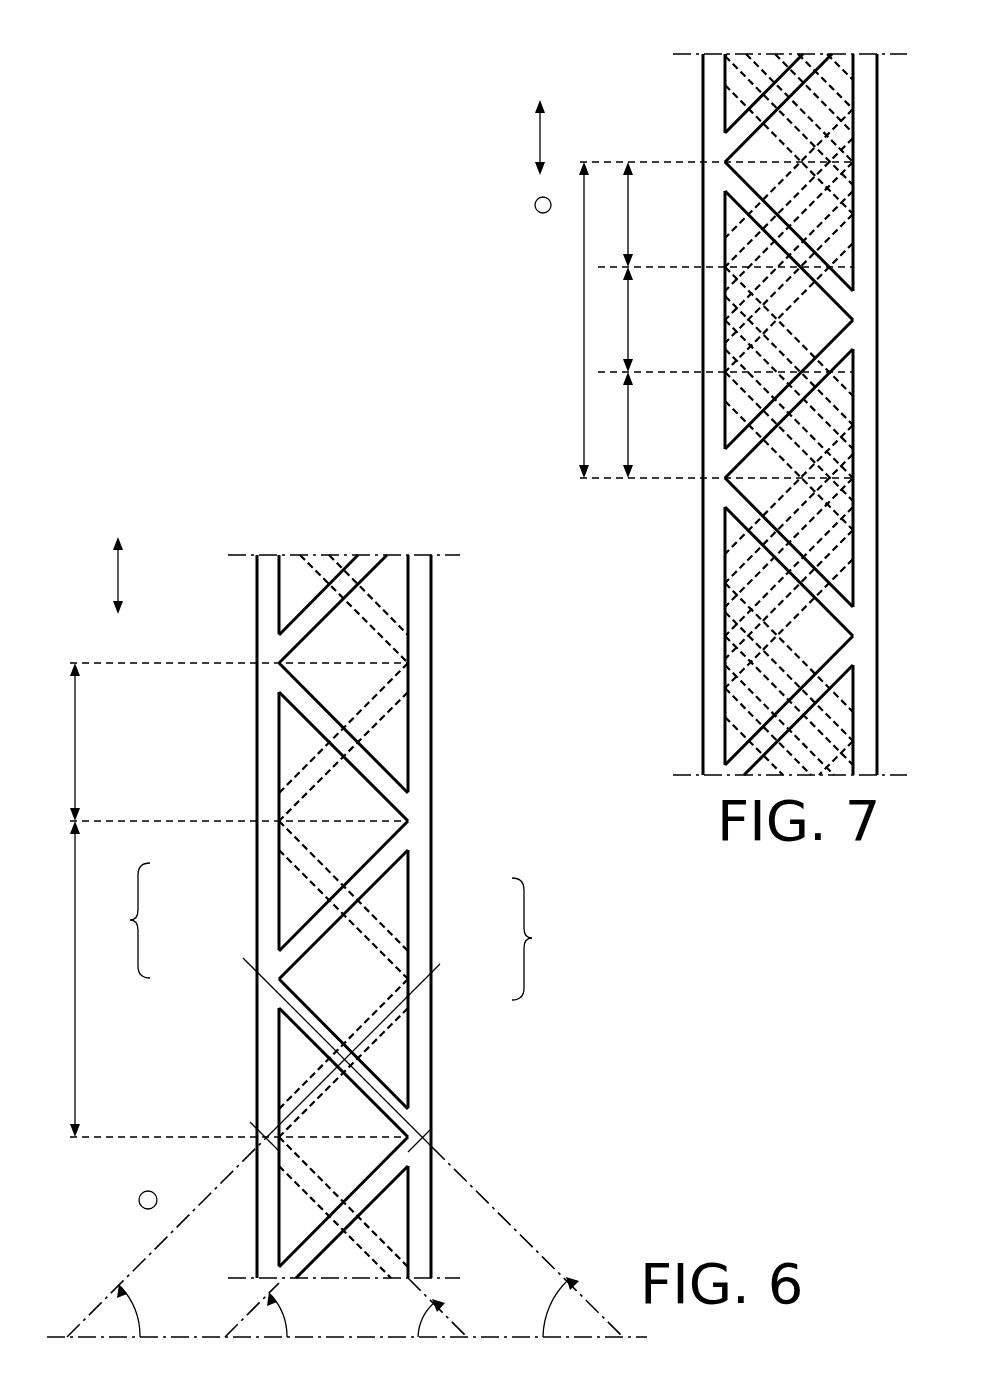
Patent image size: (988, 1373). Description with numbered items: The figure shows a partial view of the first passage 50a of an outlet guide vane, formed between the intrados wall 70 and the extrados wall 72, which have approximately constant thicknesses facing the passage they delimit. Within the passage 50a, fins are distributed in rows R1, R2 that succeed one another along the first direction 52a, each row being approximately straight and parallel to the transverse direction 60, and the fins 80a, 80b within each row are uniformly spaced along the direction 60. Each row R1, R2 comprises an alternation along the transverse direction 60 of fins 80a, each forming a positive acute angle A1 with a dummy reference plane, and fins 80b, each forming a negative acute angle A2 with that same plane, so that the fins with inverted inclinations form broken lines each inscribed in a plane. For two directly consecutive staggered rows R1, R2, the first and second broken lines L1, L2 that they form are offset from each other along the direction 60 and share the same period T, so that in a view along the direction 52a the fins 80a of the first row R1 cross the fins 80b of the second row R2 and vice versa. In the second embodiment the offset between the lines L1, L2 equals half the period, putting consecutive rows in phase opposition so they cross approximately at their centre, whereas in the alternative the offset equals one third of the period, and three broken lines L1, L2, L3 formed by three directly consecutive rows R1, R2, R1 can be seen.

In FIG. 6, the first passage 50a is at (332, 916).
In FIG. 7, the first passage 50a is at (827, 396).
In FIG. 6, the first direction 52a is at (139, 1205).
In FIG. 7, the first direction 52a is at (535, 208).
In FIG. 6, the transverse direction 60 is at (112, 578).
In FIG. 7, the transverse direction 60 is at (532, 148).
In FIG. 6, the intrados wall 70 is at (264, 735).
In FIG. 7, the intrados wall 70 is at (712, 142).
In FIG. 6, the extrados wall 72 is at (421, 652).
In FIG. 7, the extrados wall 72 is at (864, 117).
In FIG. 6, the fins 80a is at (317, 878).
In FIG. 6, the fins 80b is at (307, 777).
In FIG. 6, the first row R1 is at (535, 939).
In FIG. 7, the first row R1 is at (790, 507).
In FIG. 6, the second row R2 is at (126, 920).
In FIG. 7, the second row R2 is at (835, 567).
In FIG. 6, the first broken line L1 is at (380, 1193).
In FIG. 7, the first broken line L1 is at (784, 716).
In FIG. 6, the second broken line L2 is at (313, 1100).
In FIG. 7, the second broken line L2 is at (782, 611).
In FIG. 7, the third broken line L3 is at (782, 516).
In FIG. 6, the positive acute angle A1 is at (418, 1322).
In FIG. 6, the negative acute angle A2 is at (132, 1298).
In FIG. 6, the period T is at (218, 900).
In FIG. 7, the period T is at (708, 320).